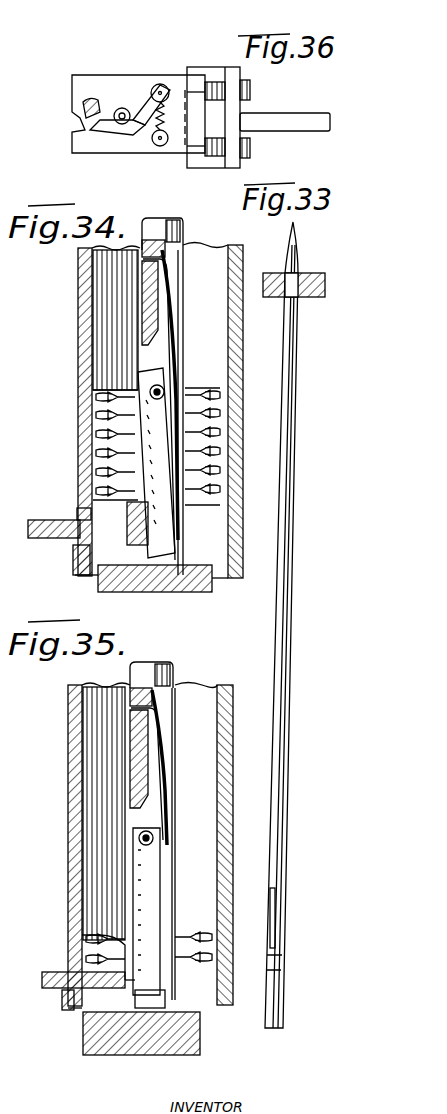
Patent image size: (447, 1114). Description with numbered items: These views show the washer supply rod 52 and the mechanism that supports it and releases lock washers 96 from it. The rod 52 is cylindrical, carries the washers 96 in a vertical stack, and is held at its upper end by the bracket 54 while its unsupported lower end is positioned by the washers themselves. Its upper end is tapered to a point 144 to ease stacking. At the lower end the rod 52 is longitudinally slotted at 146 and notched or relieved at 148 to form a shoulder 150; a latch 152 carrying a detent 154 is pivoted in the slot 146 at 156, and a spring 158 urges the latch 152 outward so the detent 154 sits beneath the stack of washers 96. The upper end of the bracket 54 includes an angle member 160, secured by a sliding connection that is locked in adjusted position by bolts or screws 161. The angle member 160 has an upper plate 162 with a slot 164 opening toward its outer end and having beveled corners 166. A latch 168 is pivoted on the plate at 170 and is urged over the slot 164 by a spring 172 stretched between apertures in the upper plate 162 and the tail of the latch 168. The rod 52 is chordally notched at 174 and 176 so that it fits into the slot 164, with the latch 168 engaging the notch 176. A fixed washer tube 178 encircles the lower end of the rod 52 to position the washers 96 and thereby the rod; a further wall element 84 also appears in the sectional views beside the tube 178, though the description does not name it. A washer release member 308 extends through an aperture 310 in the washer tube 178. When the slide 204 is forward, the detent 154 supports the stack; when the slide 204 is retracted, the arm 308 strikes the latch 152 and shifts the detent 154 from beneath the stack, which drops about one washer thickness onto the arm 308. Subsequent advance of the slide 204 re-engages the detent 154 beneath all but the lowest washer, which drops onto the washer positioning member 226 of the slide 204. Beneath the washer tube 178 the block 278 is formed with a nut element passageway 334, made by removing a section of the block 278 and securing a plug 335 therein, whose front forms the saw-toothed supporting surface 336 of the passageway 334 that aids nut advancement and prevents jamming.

In FIG. 36, the washer supply rod 52 is at (82, 110).
In FIG. 34, the washer supply rod 52 is at (152, 230).
In FIG. 33, the washer supply rod 52 is at (284, 352).
In FIG. 35, the washer supply rod 52 is at (148, 670).
In FIG. 35, the bracket 54 is at (116, 844).
In FIG. 34, the housing wall 84 is at (16, 370).
In FIG. 34, the lock washers 96 is at (215, 444).
In FIG. 35, the lock washers 96 is at (195, 930).
In FIG. 33, the pointed upper end 144 is at (295, 232).
In FIG. 35, the longitudinal slot 146 is at (167, 703).
In FIG. 35, the notch 148 is at (160, 990).
In FIG. 33, the shoulder 150 is at (278, 1030).
In FIG. 35, the shoulder 150 is at (82, 935).
In FIG. 34, the latch 152 is at (140, 532).
In FIG. 33, the latch 152 is at (268, 1005).
In FIG. 35, the latch 152 is at (145, 862).
In FIG. 34, the detent 154 is at (125, 505).
In FIG. 35, the detent 154 is at (110, 1010).
In FIG. 34, the pivot 156 is at (163, 386).
In FIG. 35, the pivot 156 is at (152, 830).
In FIG. 34, the spring 158 is at (173, 335).
In FIG. 35, the spring 158 is at (162, 750).
In FIG. 36, the angle member 160 is at (181, 80).
In FIG. 36, the bolts or screws 161 is at (245, 90).
In FIG. 36, the upper plate 162 is at (104, 85).
In FIG. 33, the upper plate 162 is at (287, 278).
In FIG. 36, the slot 164 is at (97, 100).
In FIG. 33, the slot 164 is at (306, 300).
In FIG. 36, the beveled corners 166 is at (82, 108).
In FIG. 36, the latch 168 is at (102, 138).
In FIG. 33, the latch 168 is at (315, 273).
In FIG. 36, the pivot 170 is at (118, 100).
In FIG. 36, the spring 172 is at (148, 135).
In FIG. 33, the chordal notch 174 is at (283, 262).
In FIG. 33, the chordal notch 176 is at (287, 300).
In FIG. 34, the washer tube 178 is at (90, 325).
In FIG. 35, the washer tube 178 is at (80, 705).
In FIG. 34, the slide 204 is at (145, 586).
In FIG. 35, the slide 204 is at (137, 1056).
In FIG. 34, the washer positioning member 226 is at (205, 585).
In FIG. 35, the washer positioning member 226 is at (195, 1048).
In FIG. 36, the block 278 is at (72, 148).
In FIG. 34, the washer release member 308 is at (42, 540).
In FIG. 35, the washer release member 308 is at (70, 1025).
In FIG. 34, the aperture 310 is at (75, 514).
In FIG. 35, the aperture 310 is at (55, 1000).
In FIG. 34, the nut element passageway 334 is at (30, 270).
In FIG. 35, the nut element passageway 334 is at (62, 848).
In FIG. 34, the plug 335 is at (75, 284).
In FIG. 34, the supporting surface 336 is at (50, 280).